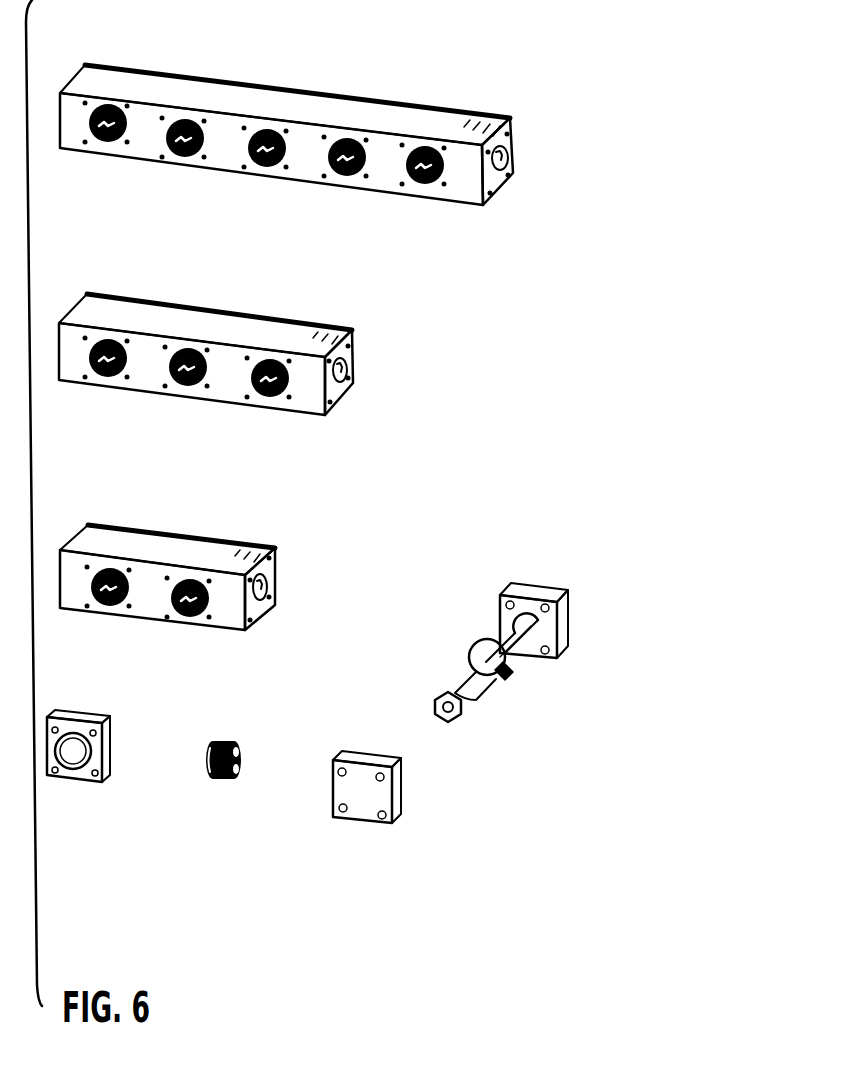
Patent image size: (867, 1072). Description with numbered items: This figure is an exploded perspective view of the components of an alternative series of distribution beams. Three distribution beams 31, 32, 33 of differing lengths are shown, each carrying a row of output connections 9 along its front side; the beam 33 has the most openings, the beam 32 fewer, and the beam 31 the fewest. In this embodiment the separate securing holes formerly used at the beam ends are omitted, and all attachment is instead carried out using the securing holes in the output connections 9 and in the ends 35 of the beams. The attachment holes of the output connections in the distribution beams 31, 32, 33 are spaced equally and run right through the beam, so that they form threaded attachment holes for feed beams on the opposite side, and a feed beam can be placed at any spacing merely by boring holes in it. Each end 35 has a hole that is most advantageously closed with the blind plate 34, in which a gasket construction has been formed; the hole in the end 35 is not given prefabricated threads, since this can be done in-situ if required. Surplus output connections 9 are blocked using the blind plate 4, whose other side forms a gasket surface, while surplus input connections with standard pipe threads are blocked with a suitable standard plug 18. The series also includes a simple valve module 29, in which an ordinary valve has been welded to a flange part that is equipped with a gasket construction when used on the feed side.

The blind plate 4 is at (360, 797).
The output connections 9 is at (410, 180).
The standard plug 18 is at (240, 755).
The valve module 29 is at (540, 580).
The distribution beam 31 is at (188, 555).
The distribution beam 32 is at (252, 332).
The distribution beam 33 is at (320, 108).
The blind plate 34 is at (97, 758).
The end 35 is at (510, 145).